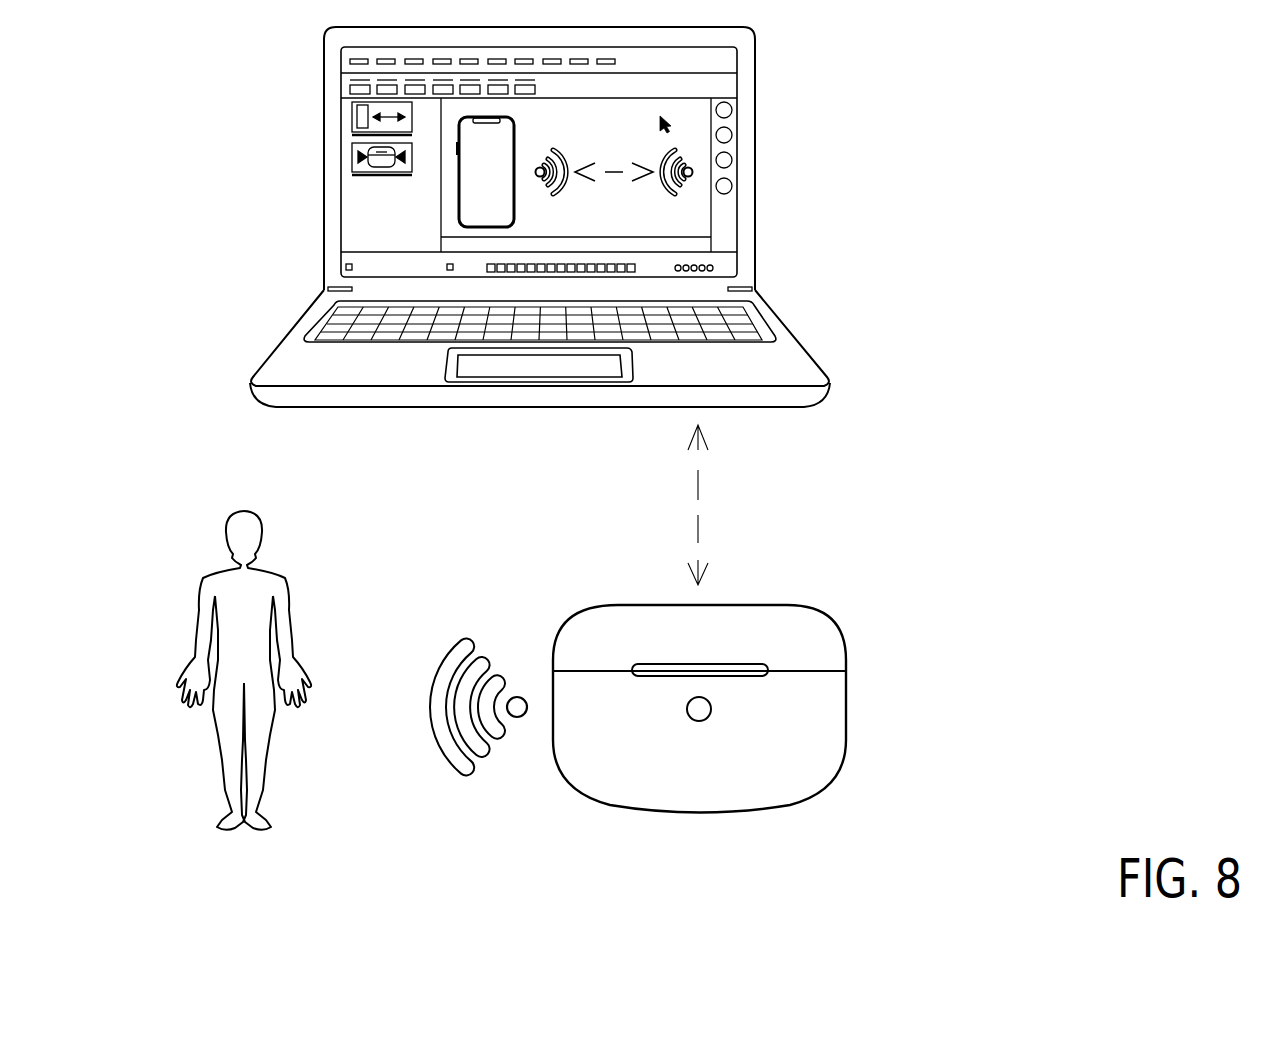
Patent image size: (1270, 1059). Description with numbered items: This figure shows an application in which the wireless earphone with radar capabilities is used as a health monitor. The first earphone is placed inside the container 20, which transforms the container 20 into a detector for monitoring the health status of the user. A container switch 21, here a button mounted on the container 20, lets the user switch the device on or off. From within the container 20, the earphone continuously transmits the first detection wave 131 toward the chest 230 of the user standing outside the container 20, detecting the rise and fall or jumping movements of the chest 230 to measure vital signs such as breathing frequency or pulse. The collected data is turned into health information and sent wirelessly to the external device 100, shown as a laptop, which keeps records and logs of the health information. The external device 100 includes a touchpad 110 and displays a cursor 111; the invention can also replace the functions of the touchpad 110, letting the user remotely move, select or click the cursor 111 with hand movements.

The external device 100 is at (546, 250).
The touchpad 110 is at (515, 365).
The cursor 111 is at (668, 126).
The container 20 is at (736, 709).
The container switch 21 is at (703, 709).
The first detection wave 131 is at (462, 643).
The chest 230 is at (235, 585).